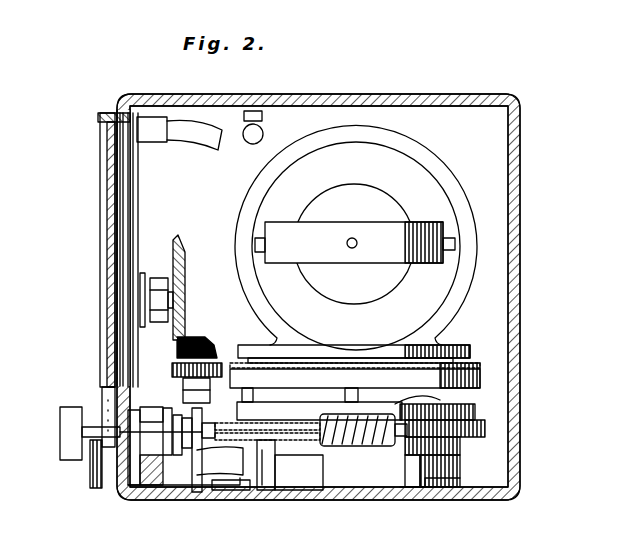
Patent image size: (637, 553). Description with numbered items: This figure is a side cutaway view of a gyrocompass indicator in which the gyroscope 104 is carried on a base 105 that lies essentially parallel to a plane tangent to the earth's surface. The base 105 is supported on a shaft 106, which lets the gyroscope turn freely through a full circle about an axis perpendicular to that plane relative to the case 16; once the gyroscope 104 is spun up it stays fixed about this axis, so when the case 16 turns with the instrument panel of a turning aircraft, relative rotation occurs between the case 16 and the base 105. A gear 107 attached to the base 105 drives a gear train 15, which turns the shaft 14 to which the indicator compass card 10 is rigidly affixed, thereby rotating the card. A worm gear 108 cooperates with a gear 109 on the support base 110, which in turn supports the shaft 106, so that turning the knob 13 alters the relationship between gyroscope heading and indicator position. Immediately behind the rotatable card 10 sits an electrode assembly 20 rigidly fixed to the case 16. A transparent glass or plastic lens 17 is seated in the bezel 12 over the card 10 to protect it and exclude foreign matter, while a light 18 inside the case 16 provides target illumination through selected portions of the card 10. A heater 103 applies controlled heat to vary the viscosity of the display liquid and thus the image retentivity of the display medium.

The indicator compass card 10 is at (120, 112).
The bezel 12 is at (98, 118).
The knob 13 is at (70, 462).
The shaft 14 is at (128, 297).
The gear train 15 is at (172, 333).
The case 16 is at (184, 96).
The lens 17 is at (107, 216).
The light 18 is at (262, 120).
The electrode assembly 20 is at (133, 113).
The heater 103 is at (227, 487).
The gyroscope 104 is at (405, 210).
The base 105 is at (470, 348).
The shaft 106 is at (476, 396).
The gear 107 is at (490, 366).
The worm gear 108 is at (353, 446).
The gear 109 is at (485, 440).
The support base 110 is at (480, 422).